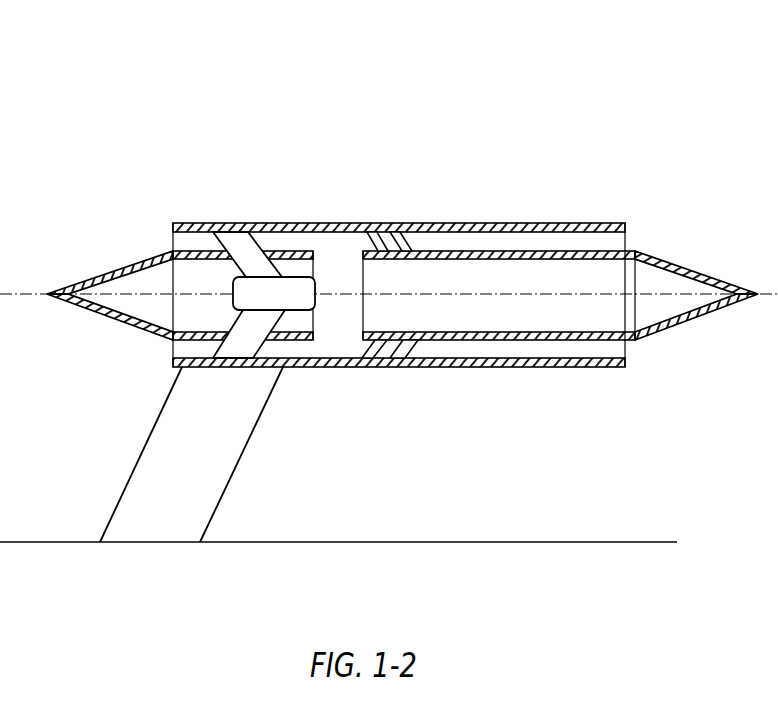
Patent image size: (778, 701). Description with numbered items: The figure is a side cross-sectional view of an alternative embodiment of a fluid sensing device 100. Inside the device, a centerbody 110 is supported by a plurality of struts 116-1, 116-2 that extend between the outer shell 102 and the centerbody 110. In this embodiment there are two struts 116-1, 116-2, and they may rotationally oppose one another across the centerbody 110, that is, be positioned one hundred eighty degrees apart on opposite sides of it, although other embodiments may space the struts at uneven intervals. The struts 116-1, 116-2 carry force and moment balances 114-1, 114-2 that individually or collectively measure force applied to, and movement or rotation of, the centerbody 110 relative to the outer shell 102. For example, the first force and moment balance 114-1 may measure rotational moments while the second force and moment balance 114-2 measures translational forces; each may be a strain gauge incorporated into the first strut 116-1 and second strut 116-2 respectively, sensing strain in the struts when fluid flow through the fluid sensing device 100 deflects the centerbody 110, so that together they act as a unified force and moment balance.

The fluid sensing device 100 is at (633, 128).
The outer shell 102 is at (562, 223).
The centerbody 110 is at (645, 252).
The first force and moment balance 114-1 is at (407, 345).
The second force and moment balance 114-2 is at (420, 240).
The first strut 116-1 is at (375, 352).
The second strut 116-2 is at (372, 240).